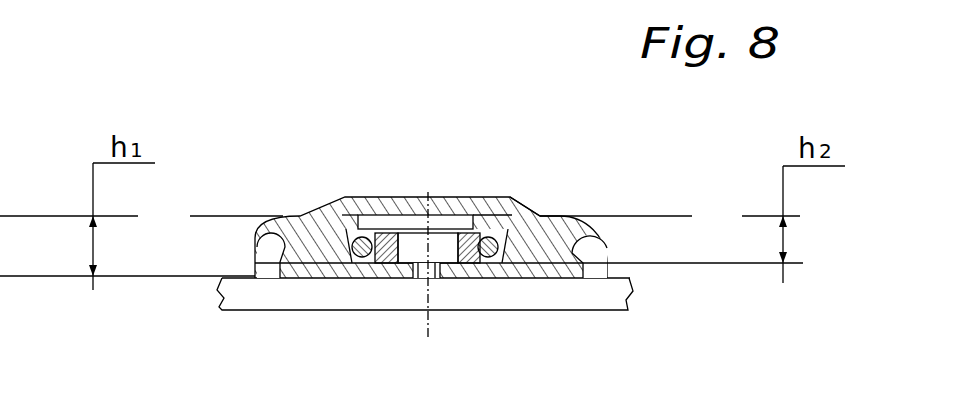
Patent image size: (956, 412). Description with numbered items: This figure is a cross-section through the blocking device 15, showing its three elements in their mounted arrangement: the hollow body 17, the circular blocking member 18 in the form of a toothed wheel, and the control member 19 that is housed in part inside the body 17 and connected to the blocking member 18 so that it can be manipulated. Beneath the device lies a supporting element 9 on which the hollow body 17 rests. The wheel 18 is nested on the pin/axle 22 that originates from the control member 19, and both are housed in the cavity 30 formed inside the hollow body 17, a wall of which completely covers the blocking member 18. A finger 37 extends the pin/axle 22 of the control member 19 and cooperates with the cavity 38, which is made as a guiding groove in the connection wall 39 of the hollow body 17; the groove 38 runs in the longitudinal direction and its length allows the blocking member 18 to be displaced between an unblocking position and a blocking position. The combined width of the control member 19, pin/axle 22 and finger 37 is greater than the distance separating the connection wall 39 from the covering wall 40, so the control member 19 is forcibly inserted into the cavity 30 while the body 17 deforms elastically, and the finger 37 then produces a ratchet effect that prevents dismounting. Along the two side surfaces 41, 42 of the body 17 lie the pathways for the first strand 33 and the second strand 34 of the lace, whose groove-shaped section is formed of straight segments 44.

The base plate 9 is at (222, 308).
The blocking device 15 is at (527, 135).
The hollow body 17 is at (305, 213).
The blocking member 18 is at (392, 278).
The control member 19 is at (413, 224).
The pin/axle 22 is at (440, 240).
The cavity 30 is at (387, 214).
The first strand 33 is at (332, 215).
The second strand 34 is at (505, 238).
The finger 37 is at (437, 279).
The cavity (guiding groove) 38 is at (415, 279).
The connection wall 39 is at (508, 268).
The covering wall 40 is at (478, 207).
The side surface 41 is at (607, 250).
The side surface 42 is at (255, 243).
The straight segments 44 is at (507, 198).